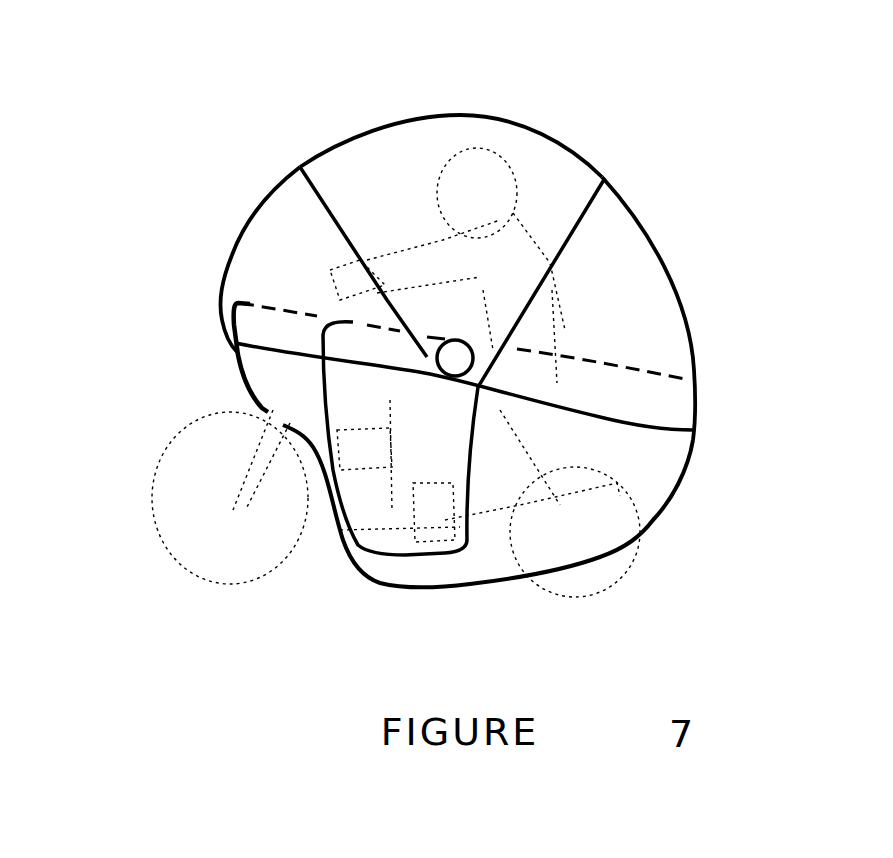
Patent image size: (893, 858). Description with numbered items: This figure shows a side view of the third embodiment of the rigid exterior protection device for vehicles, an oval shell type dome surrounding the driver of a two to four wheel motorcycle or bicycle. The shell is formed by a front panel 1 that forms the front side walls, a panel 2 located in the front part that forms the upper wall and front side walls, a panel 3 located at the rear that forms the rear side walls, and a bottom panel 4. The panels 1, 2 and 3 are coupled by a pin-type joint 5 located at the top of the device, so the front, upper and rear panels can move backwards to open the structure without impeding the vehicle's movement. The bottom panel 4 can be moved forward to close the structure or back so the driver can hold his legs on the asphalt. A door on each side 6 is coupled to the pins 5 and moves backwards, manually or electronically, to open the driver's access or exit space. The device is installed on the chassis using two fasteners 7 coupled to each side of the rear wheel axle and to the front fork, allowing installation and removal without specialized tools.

The front panel 1 is at (258, 245).
The panel 2 is at (441, 135).
The panel 3 is at (632, 310).
The bottom panel 4 is at (425, 580).
The pin-type joint 5 is at (430, 359).
The door 6 is at (357, 495).
The fasteners 7 is at (247, 372).